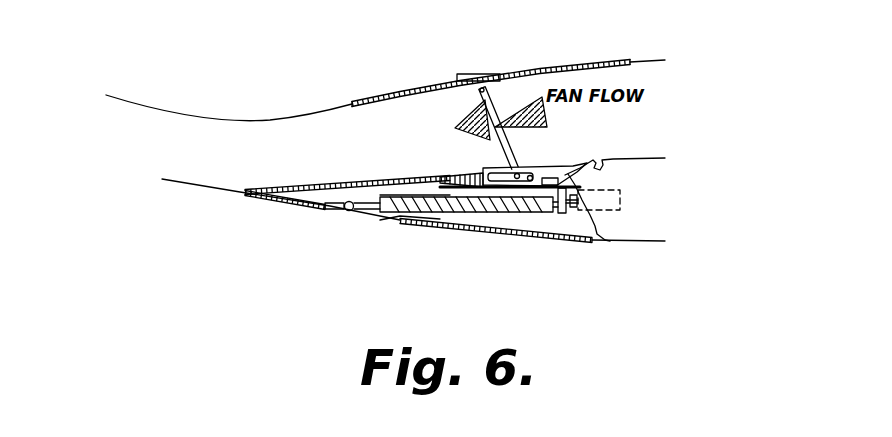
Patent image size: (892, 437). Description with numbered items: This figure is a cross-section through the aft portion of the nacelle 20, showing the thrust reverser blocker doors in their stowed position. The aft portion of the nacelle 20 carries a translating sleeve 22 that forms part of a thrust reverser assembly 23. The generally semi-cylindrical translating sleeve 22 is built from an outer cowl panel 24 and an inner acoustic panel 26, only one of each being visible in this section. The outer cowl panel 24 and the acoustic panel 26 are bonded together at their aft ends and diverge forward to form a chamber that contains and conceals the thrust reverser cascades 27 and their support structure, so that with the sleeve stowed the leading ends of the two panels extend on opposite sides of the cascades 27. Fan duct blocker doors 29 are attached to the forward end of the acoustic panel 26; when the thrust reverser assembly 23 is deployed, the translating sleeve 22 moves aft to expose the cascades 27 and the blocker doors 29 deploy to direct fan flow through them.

The nacelle 20 is at (400, 58).
The translating sleeve 22 is at (270, 218).
The thrust reverser assembly 23 is at (678, 209).
The outer cowl panel 24 is at (480, 244).
The acoustic panel 26 is at (338, 190).
The thrust reverser cascades 27 is at (531, 219).
The fan duct blocker doors 29 is at (544, 165).